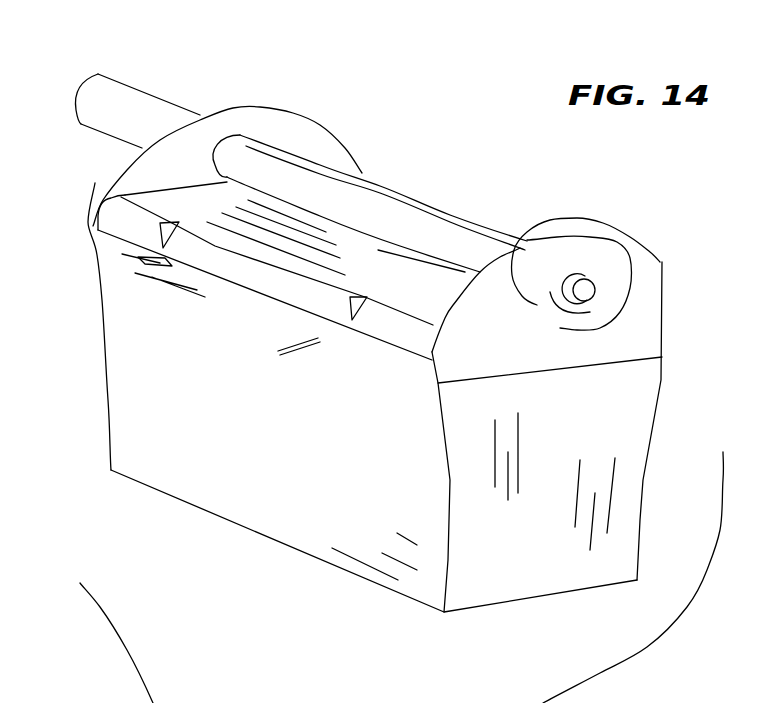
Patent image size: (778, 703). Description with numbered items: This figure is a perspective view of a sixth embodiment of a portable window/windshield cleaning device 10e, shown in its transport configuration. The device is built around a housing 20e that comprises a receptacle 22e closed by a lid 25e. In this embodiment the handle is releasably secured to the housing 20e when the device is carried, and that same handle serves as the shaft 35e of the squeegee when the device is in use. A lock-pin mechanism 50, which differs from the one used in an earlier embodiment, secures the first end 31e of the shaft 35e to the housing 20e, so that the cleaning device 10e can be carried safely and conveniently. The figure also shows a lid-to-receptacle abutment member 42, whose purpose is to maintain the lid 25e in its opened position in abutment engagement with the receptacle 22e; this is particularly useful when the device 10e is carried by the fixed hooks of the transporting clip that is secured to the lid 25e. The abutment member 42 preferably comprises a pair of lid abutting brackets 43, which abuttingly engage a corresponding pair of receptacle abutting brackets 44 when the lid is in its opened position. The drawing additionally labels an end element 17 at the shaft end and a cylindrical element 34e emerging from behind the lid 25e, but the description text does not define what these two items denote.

The portable window/windshield cleaning device 10e is at (153, 524).
The roller end cap 17 is at (577, 291).
The housing 20e is at (330, 574).
The receptacle 22e is at (110, 453).
The lid 25e is at (272, 141).
The first end 31e is at (595, 290).
The roller 34e is at (175, 97).
The shaft 35e is at (473, 240).
The lid-to-receptacle abutment member 42 is at (342, 319).
The lid abutting brackets 43 is at (363, 296).
The receptacle abutting brackets 44 is at (350, 327).
The lock-pin mechanism 50 is at (619, 344).